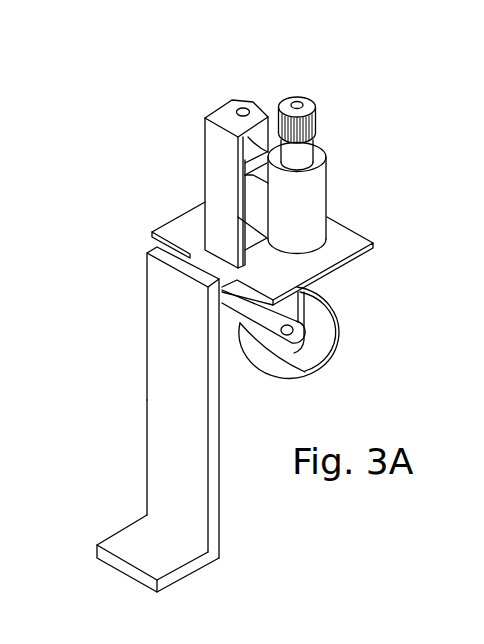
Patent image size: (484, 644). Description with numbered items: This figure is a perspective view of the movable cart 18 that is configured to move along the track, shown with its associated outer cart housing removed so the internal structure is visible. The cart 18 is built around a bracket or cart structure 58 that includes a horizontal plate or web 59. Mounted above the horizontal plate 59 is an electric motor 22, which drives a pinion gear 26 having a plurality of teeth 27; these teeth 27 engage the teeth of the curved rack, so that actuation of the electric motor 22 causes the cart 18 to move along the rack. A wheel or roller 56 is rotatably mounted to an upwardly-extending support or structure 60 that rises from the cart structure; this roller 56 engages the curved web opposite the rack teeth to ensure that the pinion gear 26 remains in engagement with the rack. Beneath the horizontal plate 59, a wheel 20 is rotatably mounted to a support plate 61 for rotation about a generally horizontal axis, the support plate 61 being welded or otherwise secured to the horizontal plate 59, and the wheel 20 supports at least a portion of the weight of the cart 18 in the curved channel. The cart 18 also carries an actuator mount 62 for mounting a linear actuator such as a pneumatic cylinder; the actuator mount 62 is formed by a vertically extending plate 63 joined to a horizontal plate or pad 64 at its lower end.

The cart 18 is at (173, 163).
The wheel 20 is at (240, 323).
The electric motor 22 is at (312, 203).
The pinion gear 26 is at (318, 122).
The teeth 27 is at (315, 140).
The wheel or roller 56 is at (253, 145).
The bracket or cart structure 58 is at (146, 272).
The horizontal plate or web 59 is at (370, 251).
The upwardly-extending support or structure 60 is at (205, 158).
The support plates 61 is at (290, 310).
The actuator mount 62 is at (145, 383).
The vertically extending plate 63 is at (145, 333).
The horizontal plate or pad 64 is at (105, 564).